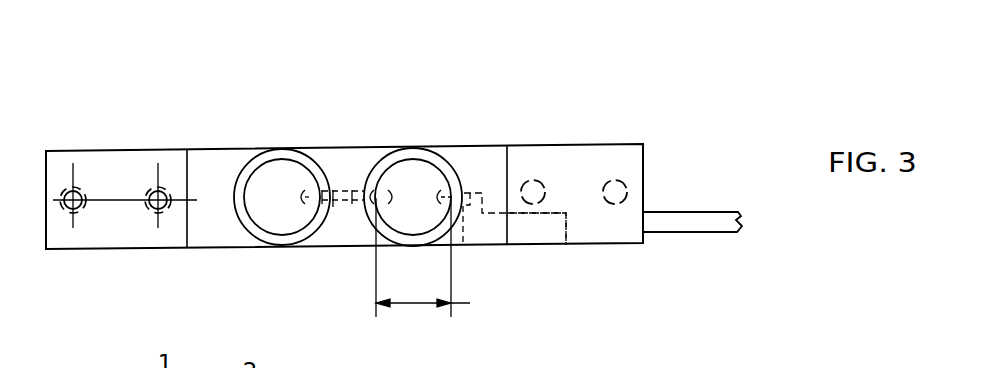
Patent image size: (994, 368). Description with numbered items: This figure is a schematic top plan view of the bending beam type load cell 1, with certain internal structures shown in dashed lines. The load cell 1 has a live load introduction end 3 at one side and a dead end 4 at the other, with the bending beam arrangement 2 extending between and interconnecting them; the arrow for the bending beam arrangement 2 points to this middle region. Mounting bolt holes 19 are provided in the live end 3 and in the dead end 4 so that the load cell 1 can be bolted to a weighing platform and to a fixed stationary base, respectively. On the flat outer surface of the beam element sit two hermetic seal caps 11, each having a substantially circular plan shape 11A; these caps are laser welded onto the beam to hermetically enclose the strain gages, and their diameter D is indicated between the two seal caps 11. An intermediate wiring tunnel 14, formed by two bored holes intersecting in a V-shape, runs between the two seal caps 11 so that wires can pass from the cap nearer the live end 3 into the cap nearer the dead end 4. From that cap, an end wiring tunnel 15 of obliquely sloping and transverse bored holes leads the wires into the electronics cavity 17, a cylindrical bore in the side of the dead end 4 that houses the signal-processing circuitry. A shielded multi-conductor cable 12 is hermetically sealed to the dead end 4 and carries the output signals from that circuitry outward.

The bending beam type load cell 1 is at (173, 46).
The bending beam arrangement 2 is at (344, 102).
The live load introduction end 3 is at (106, 160).
The dead end 4 is at (563, 150).
The hermetic seal cap 11 is at (412, 170).
The circular plan shape 11A is at (270, 183).
The shielded multi-conductor cable 12 is at (683, 213).
The intermediate wiring tunnel 14 is at (333, 207).
The end wiring tunnel 15 is at (471, 190).
The electronics cavity 17 is at (525, 228).
The mounting bolt holes 19 is at (159, 193).
The diameter D is at (437, 257).